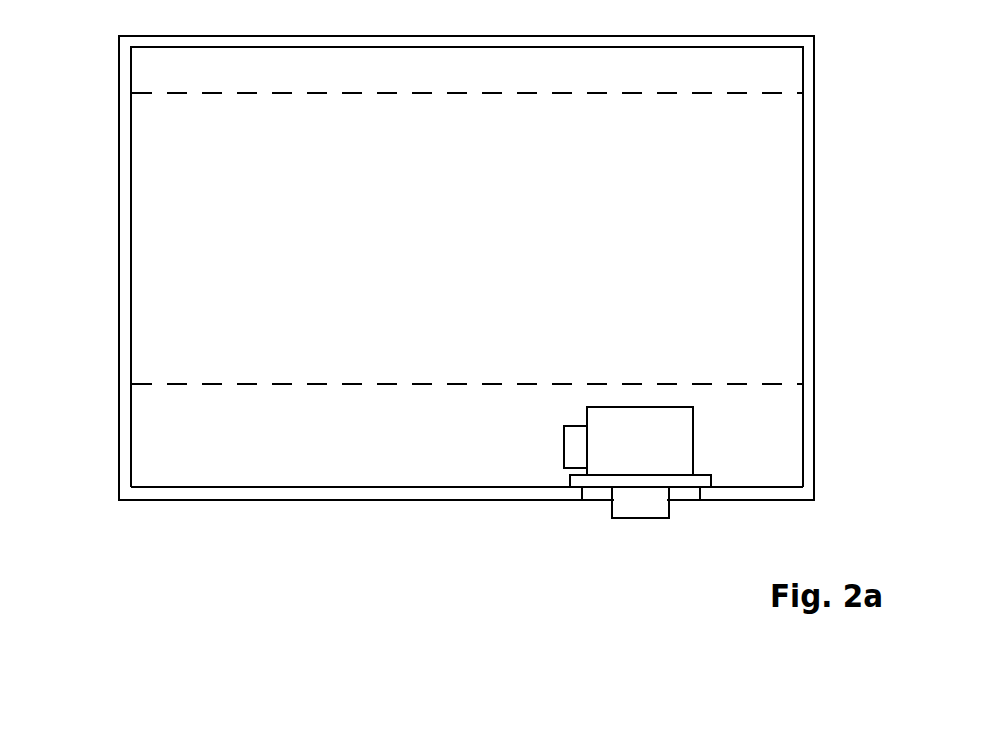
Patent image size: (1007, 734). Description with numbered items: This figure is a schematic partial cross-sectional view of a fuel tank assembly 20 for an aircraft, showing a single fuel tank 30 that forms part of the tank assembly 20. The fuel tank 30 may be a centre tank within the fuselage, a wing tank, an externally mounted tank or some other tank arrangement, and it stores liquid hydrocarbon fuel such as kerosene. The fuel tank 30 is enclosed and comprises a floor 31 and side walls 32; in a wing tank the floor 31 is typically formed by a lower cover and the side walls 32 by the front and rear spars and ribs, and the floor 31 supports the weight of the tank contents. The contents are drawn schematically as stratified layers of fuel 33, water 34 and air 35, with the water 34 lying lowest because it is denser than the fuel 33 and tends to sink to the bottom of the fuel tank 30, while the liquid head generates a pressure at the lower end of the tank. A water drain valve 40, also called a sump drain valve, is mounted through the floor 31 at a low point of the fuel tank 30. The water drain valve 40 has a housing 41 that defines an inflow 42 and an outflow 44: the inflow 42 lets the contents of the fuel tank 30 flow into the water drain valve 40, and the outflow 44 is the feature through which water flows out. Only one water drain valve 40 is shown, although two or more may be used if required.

The tank assembly 20 is at (845, 110).
The fuel tank 30 is at (810, 370).
The floor 31 is at (320, 487).
The side walls 32 is at (805, 297).
The fuel 33 is at (785, 222).
The water 34 is at (783, 441).
The air 35 is at (147, 70).
The water drain valve 40 is at (586, 466).
The housing 41 is at (631, 407).
The inflow 42 is at (563, 435).
The outflow 44 is at (656, 518).